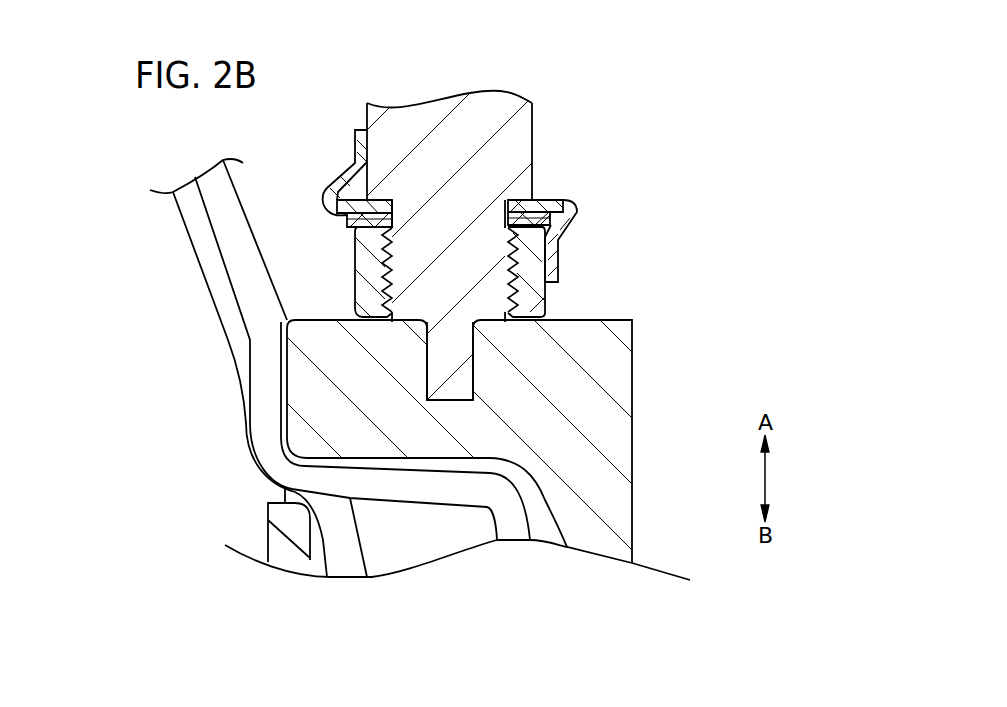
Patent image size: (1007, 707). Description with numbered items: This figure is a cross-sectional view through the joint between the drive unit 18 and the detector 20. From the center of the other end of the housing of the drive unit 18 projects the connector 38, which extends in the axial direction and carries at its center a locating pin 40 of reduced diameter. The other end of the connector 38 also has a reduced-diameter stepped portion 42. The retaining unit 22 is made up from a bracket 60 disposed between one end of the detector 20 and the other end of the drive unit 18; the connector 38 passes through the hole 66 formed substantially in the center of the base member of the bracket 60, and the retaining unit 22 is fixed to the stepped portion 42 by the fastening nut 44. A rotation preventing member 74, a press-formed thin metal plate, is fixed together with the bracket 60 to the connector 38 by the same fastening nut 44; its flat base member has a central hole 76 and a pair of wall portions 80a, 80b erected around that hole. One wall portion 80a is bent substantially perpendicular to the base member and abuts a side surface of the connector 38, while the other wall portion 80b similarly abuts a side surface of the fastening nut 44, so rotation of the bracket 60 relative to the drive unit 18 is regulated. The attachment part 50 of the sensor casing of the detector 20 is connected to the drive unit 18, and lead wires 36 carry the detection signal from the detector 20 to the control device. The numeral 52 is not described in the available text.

The drive unit 18 is at (547, 136).
The connector 38 is at (443, 113).
The locating pin 40 is at (455, 390).
The hole 76 is at (393, 207).
The hole 66 is at (393, 217).
The stepped portion 42 is at (347, 221).
The rotation preventing member 74 is at (551, 188).
The retaining unit 22 is at (570, 222).
The bracket 60 is at (518, 219).
The fastening nut 44 is at (365, 265).
The wall portion 80a is at (357, 140).
The wall portion 80b is at (548, 266).
The attachment part 50 is at (590, 330).
The hole 52 is at (432, 372).
The detector 20 is at (663, 446).
The lead wires 36 is at (255, 285).